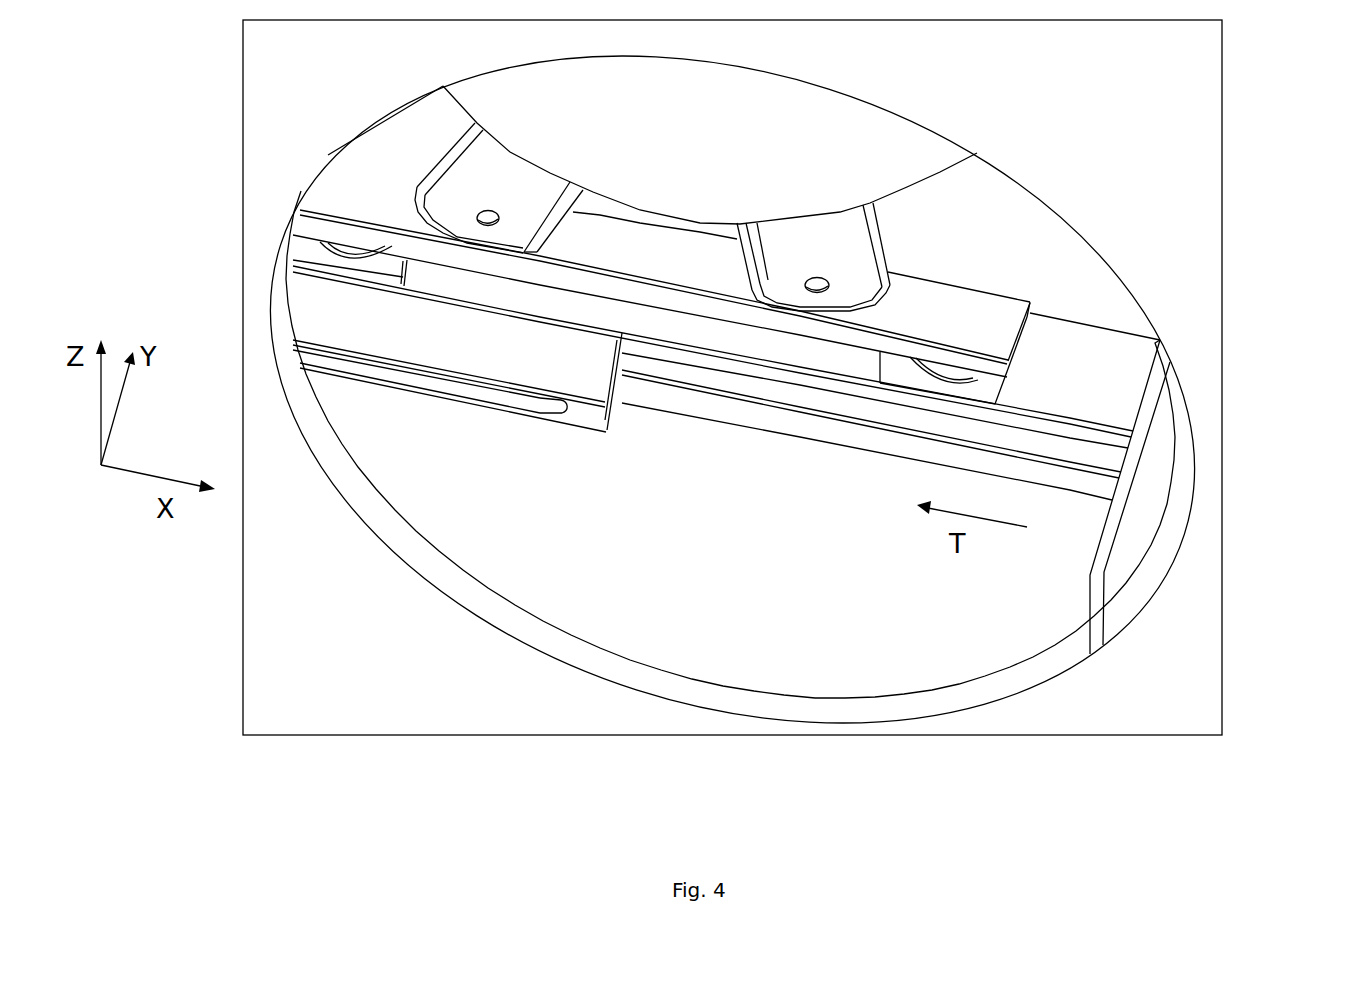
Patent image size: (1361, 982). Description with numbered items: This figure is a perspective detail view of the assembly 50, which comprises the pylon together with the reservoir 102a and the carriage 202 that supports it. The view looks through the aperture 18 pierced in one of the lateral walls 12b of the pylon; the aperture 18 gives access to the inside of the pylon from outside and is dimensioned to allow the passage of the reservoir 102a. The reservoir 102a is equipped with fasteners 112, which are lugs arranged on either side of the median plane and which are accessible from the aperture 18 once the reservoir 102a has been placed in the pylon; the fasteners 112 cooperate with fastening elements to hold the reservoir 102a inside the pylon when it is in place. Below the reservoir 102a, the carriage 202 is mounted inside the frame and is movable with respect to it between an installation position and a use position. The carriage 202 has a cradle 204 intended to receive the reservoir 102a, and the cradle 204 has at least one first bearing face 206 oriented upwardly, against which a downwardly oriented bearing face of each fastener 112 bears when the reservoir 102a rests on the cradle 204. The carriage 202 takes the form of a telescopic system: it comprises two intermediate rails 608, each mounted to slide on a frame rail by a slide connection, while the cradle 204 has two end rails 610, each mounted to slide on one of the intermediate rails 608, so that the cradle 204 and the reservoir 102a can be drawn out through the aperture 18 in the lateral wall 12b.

The lateral wall 12b is at (352, 694).
The assembly 50 is at (1258, 217).
The aperture 18 is at (473, 610).
The reservoir 102a is at (718, 128).
The fastener 112 is at (843, 252).
The cradle 204 is at (350, 197).
The first bearing face 206 is at (963, 313).
The intermediate rail 608 is at (590, 417).
The end rail 610 is at (727, 408).
The carriage 202 is at (887, 443).